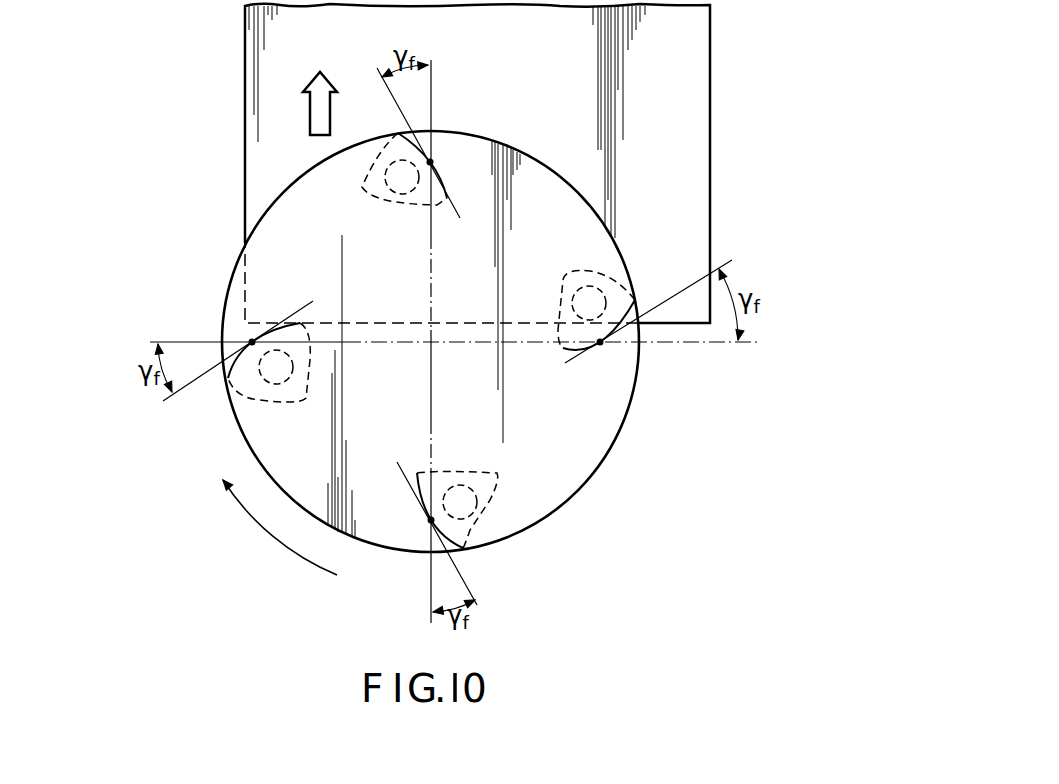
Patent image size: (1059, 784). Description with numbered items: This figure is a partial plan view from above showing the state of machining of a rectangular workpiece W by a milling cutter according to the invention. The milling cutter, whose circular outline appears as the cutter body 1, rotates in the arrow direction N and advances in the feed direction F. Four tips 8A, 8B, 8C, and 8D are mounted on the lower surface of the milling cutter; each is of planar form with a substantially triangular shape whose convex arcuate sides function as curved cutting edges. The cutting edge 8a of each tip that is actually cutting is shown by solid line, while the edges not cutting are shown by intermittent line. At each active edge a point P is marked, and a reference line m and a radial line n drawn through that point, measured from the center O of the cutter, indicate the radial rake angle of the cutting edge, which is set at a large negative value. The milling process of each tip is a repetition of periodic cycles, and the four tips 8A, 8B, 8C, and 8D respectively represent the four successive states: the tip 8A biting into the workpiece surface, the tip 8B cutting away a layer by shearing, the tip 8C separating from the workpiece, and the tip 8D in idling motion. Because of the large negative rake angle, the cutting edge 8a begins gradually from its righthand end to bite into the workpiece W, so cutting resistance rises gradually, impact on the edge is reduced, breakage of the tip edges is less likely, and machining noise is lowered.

The workpiece W is at (710, 60).
The cutter head body 1 is at (603, 480).
The tip 8A is at (238, 382).
The tip 8B is at (362, 185).
The tip 8C is at (584, 270).
The tip 8D is at (487, 522).
The cutting edge 8a is at (443, 196).
The cutting point P is at (433, 162).
The rake face line m is at (448, 329).
The reference axis n is at (451, 333).
The center of rotation O is at (433, 343).
The feed direction F is at (320, 88).
The arrow direction N is at (272, 511).